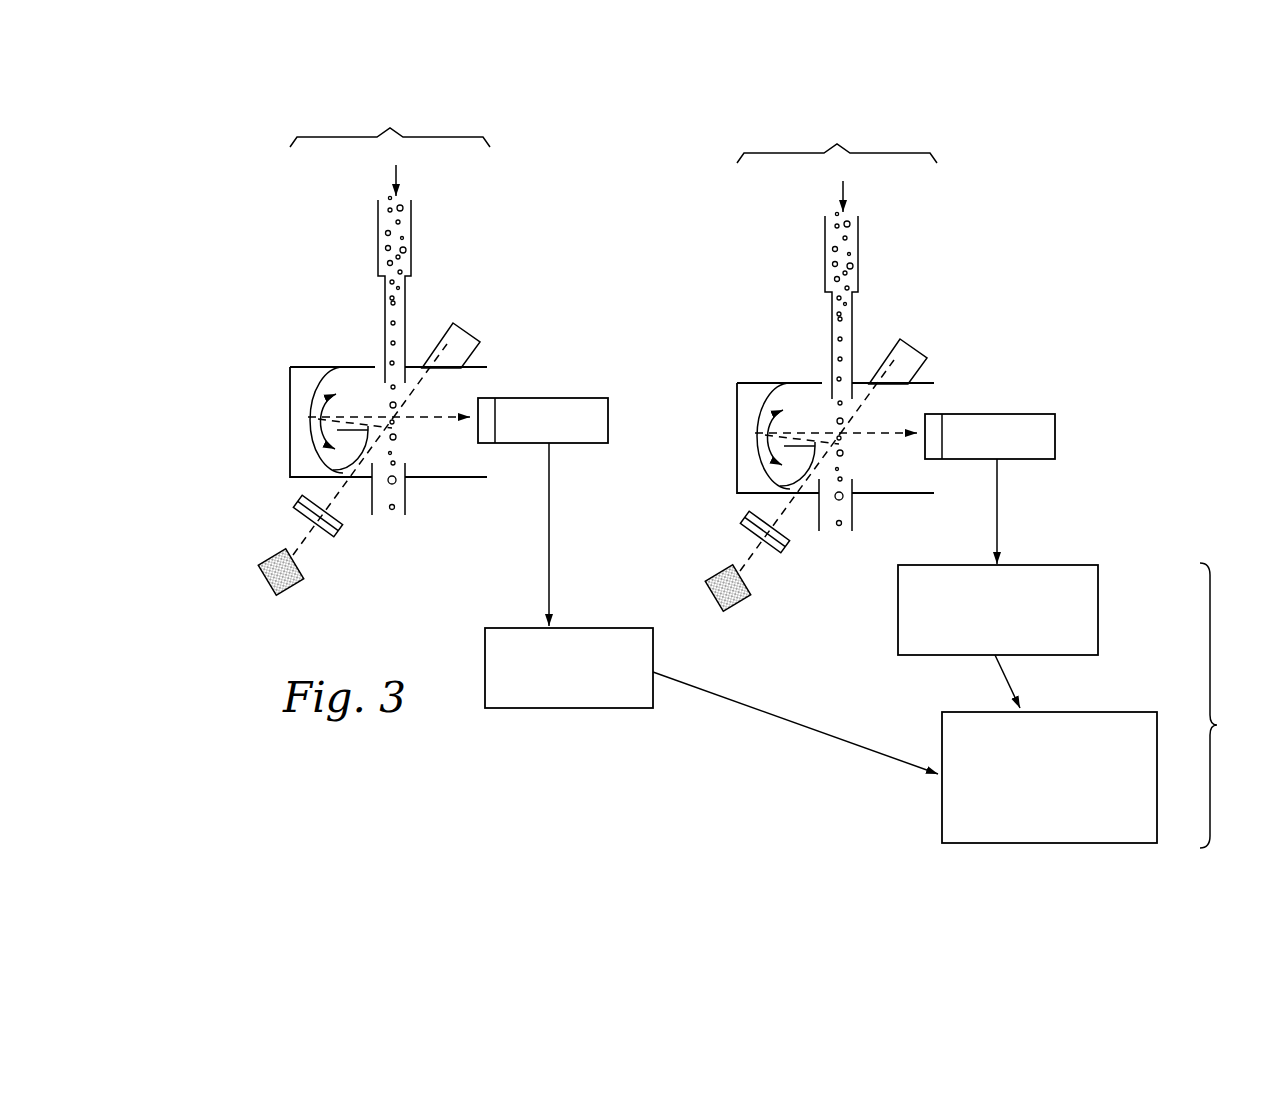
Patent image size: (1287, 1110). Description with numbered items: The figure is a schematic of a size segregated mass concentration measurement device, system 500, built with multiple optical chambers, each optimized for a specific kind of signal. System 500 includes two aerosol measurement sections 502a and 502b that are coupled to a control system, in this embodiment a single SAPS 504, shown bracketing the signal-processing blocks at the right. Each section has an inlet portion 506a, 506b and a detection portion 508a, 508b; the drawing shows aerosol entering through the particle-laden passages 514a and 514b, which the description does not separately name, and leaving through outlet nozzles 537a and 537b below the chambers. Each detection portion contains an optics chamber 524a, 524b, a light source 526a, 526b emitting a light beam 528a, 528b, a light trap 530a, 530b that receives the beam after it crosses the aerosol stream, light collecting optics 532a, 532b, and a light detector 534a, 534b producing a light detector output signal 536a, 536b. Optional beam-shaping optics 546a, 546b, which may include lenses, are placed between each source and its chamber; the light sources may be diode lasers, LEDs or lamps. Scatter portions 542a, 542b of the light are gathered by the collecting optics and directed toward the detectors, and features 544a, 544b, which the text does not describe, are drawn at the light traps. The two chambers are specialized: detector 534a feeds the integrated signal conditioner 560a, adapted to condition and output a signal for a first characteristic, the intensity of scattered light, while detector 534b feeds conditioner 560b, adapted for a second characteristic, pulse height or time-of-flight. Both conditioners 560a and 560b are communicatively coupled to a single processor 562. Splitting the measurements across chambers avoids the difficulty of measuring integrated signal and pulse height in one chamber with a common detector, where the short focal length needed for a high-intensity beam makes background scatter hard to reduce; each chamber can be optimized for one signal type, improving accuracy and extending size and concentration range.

The system 500 is at (632, 138).
The aerosol measurement section 502a is at (390, 124).
The aerosol measurement section 502b is at (837, 140).
The SAPS 504 is at (1231, 705).
The inlet portion 506a is at (252, 263).
The inlet portion 506b is at (1055, 245).
The detection portion 508a is at (188, 413).
The detection portion 508b is at (1104, 337).
The first flow tube 514a is at (407, 198).
The second flow tube 514b is at (893, 352).
The optics chamber 524a is at (376, 367).
The optics chamber 524b is at (790, 405).
The light source 526a is at (263, 566).
The light source 526b is at (685, 587).
The light beam 528a is at (340, 497).
The light beam 528b is at (828, 516).
The light trap 530a is at (453, 324).
The light trap 530b is at (912, 333).
The light collecting optics 532a is at (287, 396).
The light collecting optics 532b is at (799, 425).
The light detector 534a is at (588, 398).
The light detector 534b is at (990, 409).
The light detector output signal 536a is at (550, 547).
The light detector output signal 536b is at (1042, 511).
The outlet nozzle 537a is at (405, 500).
The outlet nozzle 537b is at (872, 507).
The scatter portion of light 542a is at (328, 462).
The scatter portion of light 542b is at (718, 471).
The first transmitted beam 544a is at (452, 352).
The second transmitted beam 544b is at (926, 377).
The beam-shaping optics 546a is at (297, 500).
The beam-shaping optics 546b is at (722, 526).
The integrated signal conditioner 560a is at (485, 658).
The conditioner 560b is at (998, 636).
The processor 562 is at (905, 757).